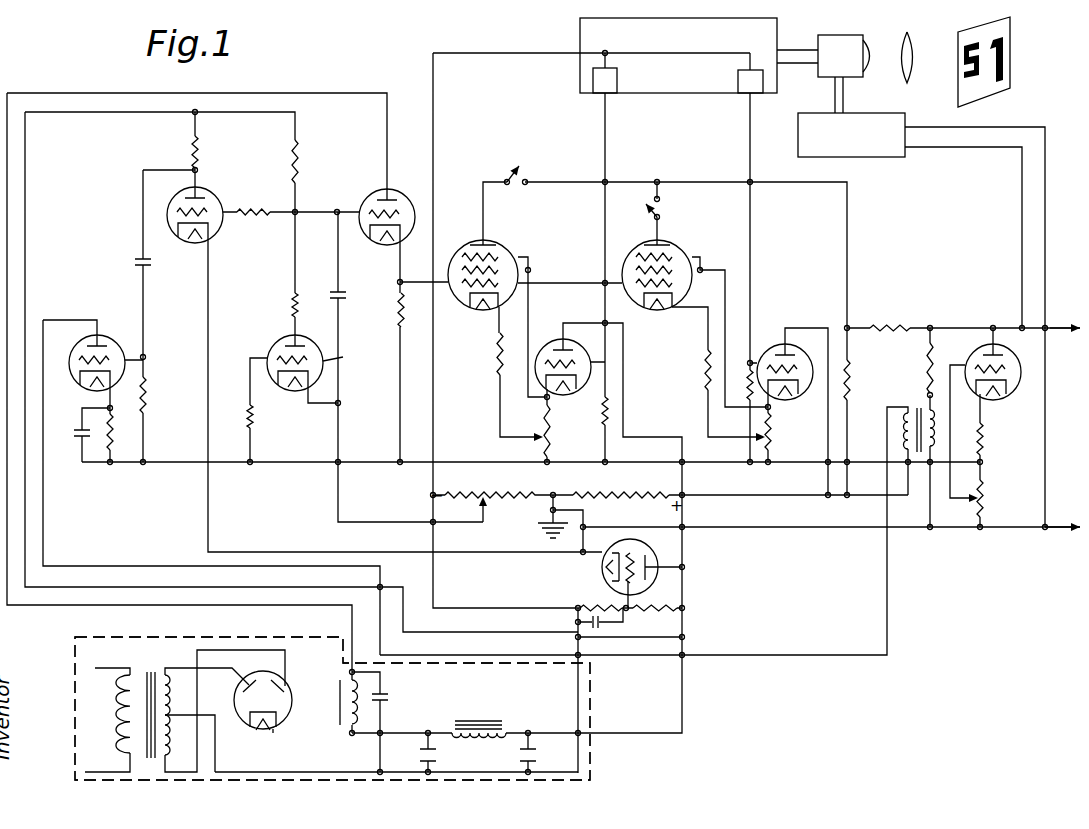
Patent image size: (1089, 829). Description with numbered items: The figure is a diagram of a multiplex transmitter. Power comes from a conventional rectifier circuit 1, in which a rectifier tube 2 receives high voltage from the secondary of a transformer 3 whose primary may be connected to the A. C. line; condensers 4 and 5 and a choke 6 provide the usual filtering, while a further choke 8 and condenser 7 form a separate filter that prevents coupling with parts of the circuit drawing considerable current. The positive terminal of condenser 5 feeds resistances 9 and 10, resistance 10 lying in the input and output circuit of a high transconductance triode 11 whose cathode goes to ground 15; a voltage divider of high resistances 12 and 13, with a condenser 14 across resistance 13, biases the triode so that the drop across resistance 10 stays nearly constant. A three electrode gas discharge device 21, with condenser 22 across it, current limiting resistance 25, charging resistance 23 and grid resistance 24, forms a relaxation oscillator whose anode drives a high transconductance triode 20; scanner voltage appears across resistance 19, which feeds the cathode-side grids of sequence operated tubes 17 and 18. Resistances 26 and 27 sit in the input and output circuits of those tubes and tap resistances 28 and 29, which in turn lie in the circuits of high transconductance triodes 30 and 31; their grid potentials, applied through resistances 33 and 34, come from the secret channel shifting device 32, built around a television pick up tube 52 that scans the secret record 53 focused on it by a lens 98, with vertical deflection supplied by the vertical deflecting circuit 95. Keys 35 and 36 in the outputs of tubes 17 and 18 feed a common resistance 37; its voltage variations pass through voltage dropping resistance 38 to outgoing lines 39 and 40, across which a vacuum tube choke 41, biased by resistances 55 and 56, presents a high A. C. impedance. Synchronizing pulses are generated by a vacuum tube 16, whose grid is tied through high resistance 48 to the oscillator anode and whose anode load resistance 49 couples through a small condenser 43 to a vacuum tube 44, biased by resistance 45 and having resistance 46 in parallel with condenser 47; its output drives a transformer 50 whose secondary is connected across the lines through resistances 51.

The rectifier circuit 1 is at (597, 766).
The rectifier tube 2 is at (244, 680).
The transformer 3 is at (160, 675).
The condenser 4 is at (424, 756).
The condenser 5 is at (540, 755).
The choke 6 is at (483, 724).
The condenser 7 is at (383, 697).
The choke 8 is at (348, 684).
The resistance 9 is at (635, 484).
The resistance 10 is at (512, 491).
The high transconductance triode 11 is at (650, 559).
The high resistance 12 is at (664, 605).
The high resistance 13 is at (595, 605).
The condenser 14 is at (606, 626).
The ground 15 is at (549, 524).
The vacuum tube 16 is at (212, 198).
The sequence operated vacuum tube 17 is at (508, 251).
The sequence operated vacuum tube 18 is at (679, 251).
The resistance 19 is at (397, 318).
The high transconductance triode 20 is at (370, 198).
The three electrode gas discharge device 21 is at (271, 345).
The condenser 22 is at (341, 295).
The high resistance 23 is at (300, 159).
The resistance 24 is at (254, 418).
The current limiting resistance 25 is at (290, 304).
The resistance 26 is at (497, 365).
The resistance 27 is at (704, 376).
The resistance 28 is at (553, 435).
The resistance 29 is at (778, 436).
The high transconductance triode 30 is at (560, 344).
The high transconductance triode 31 is at (773, 346).
The secret channel shifting device 32 is at (583, 33).
The resistance 33 is at (600, 413).
The resistance 34 is at (748, 373).
The key 35 is at (521, 173).
The key 36 is at (650, 212).
The resistance 37 is at (852, 381).
The voltage dropping resistance 38 is at (886, 326).
The outgoing line 39 is at (1056, 328).
The outgoing line 40 is at (1026, 528).
The vacuum tube choke 41 is at (1000, 397).
The small condenser 43 is at (140, 260).
The vacuum tube 44 is at (109, 338).
The resistance 45 is at (150, 397).
The resistance 46 is at (113, 432).
The condenser 47 is at (78, 428).
The high resistance 48 is at (258, 222).
The load resistance 49 is at (185, 151).
The transformer 50 is at (915, 418).
The resistances 51 is at (926, 360).
The television pick up tube 52 is at (855, 42).
The secret record 53 is at (1010, 60).
The resistance 55 is at (985, 450).
The resistance 56 is at (985, 500).
The vertical deflecting circuit 95 is at (880, 160).
The lens 98 is at (915, 58).